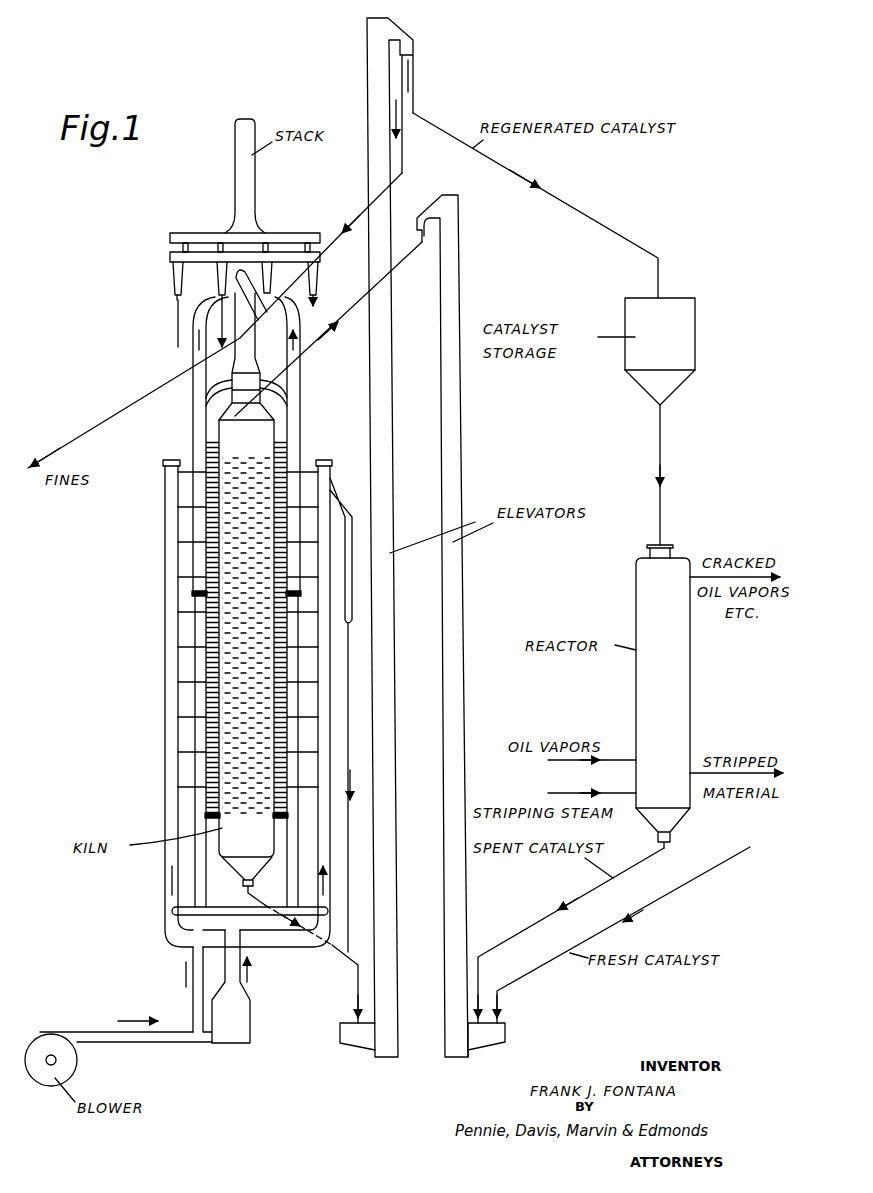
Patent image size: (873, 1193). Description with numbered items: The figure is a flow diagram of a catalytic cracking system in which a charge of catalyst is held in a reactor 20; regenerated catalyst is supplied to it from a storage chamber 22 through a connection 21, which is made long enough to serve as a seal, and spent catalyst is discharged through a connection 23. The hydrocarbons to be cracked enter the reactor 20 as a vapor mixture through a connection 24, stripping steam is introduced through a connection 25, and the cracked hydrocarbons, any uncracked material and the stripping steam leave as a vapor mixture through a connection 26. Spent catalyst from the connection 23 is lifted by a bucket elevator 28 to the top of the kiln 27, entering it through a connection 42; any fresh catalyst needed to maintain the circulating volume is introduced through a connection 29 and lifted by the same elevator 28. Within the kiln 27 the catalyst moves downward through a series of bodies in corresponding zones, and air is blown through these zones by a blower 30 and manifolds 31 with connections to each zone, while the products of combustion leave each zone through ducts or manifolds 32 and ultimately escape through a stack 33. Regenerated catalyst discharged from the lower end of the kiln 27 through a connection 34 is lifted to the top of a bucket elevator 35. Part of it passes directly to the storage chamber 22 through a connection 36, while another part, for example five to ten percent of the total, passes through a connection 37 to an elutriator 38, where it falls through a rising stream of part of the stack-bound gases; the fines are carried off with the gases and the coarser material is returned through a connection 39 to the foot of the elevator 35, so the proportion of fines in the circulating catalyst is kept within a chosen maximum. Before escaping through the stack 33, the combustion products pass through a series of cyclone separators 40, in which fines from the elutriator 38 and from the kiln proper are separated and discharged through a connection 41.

The reactor 20 is at (690, 678).
The connection 21 is at (665, 453).
The storage chamber 22 is at (685, 338).
The connection 23 is at (637, 867).
The connection 24 is at (565, 762).
The connection 25 is at (573, 793).
The connection 26 is at (697, 572).
The kiln 27 is at (267, 857).
The bucket elevator 28 is at (460, 250).
The connection 29 is at (672, 898).
The blower 30 is at (45, 1042).
The manifolds 31 is at (167, 692).
The ducts or manifolds 32 is at (192, 433).
The stack 33 is at (235, 190).
The connection 34 is at (332, 950).
The bucket elevator 35 is at (370, 43).
The connection 36 is at (603, 232).
The connection 37 is at (358, 216).
The elutriator 38 is at (248, 352).
The connection 39 is at (347, 517).
The cyclone separators 40 is at (175, 280).
The connection 41 is at (118, 414).
The connection 42 is at (318, 340).